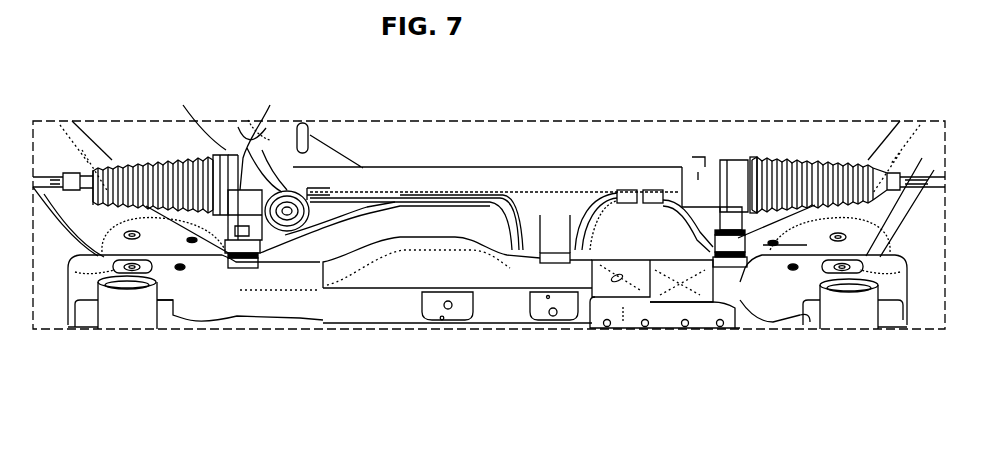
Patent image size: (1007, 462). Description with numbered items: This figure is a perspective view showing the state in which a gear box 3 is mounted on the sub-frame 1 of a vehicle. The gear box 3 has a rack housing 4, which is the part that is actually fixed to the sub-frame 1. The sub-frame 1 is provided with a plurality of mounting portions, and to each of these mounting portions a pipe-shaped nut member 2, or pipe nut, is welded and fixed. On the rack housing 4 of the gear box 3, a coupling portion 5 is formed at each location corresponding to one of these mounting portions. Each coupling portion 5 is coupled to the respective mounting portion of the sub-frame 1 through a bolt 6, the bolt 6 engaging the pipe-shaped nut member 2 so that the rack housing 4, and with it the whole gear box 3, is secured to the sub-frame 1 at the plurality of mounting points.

The sub-frame 1 is at (489, 340).
The pipe-shaped nut member 2 is at (243, 264).
The gear box 3 is at (489, 161).
The rack housing 4 is at (523, 167).
The coupling portion 5 is at (233, 185).
The bolt 6 is at (283, 192).